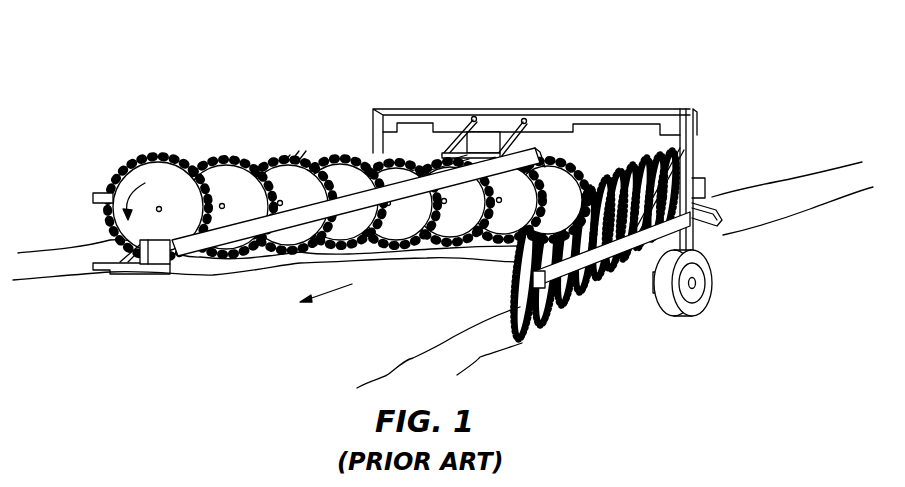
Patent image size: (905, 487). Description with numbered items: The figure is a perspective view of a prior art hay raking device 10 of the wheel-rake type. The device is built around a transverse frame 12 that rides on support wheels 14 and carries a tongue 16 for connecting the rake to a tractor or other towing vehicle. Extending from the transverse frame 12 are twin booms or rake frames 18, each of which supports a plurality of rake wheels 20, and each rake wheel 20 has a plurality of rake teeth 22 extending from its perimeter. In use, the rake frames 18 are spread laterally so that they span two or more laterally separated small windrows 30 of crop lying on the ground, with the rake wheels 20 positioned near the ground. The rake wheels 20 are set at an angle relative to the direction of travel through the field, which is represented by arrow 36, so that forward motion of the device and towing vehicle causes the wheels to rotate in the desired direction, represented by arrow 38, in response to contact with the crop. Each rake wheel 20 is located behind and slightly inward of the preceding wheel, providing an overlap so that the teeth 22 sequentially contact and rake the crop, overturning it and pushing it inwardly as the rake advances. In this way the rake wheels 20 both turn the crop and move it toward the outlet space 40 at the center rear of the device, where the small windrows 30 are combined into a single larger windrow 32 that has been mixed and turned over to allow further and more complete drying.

The hay raking device 10 is at (285, 94).
The transverse frame 12 is at (547, 130).
The support wheels 14 is at (695, 297).
The tongue 16 is at (185, 244).
The rake frames 18 is at (93, 196).
The rake wheels 20 is at (232, 180).
The rake teeth 22 is at (293, 155).
The small windrows 30 is at (67, 266).
The single larger windrow 32 is at (793, 188).
The arrow representing direction of travel 36 is at (331, 296).
The arrow representing wheel rotation direction 38 is at (110, 220).
The outlet space 40 is at (629, 165).